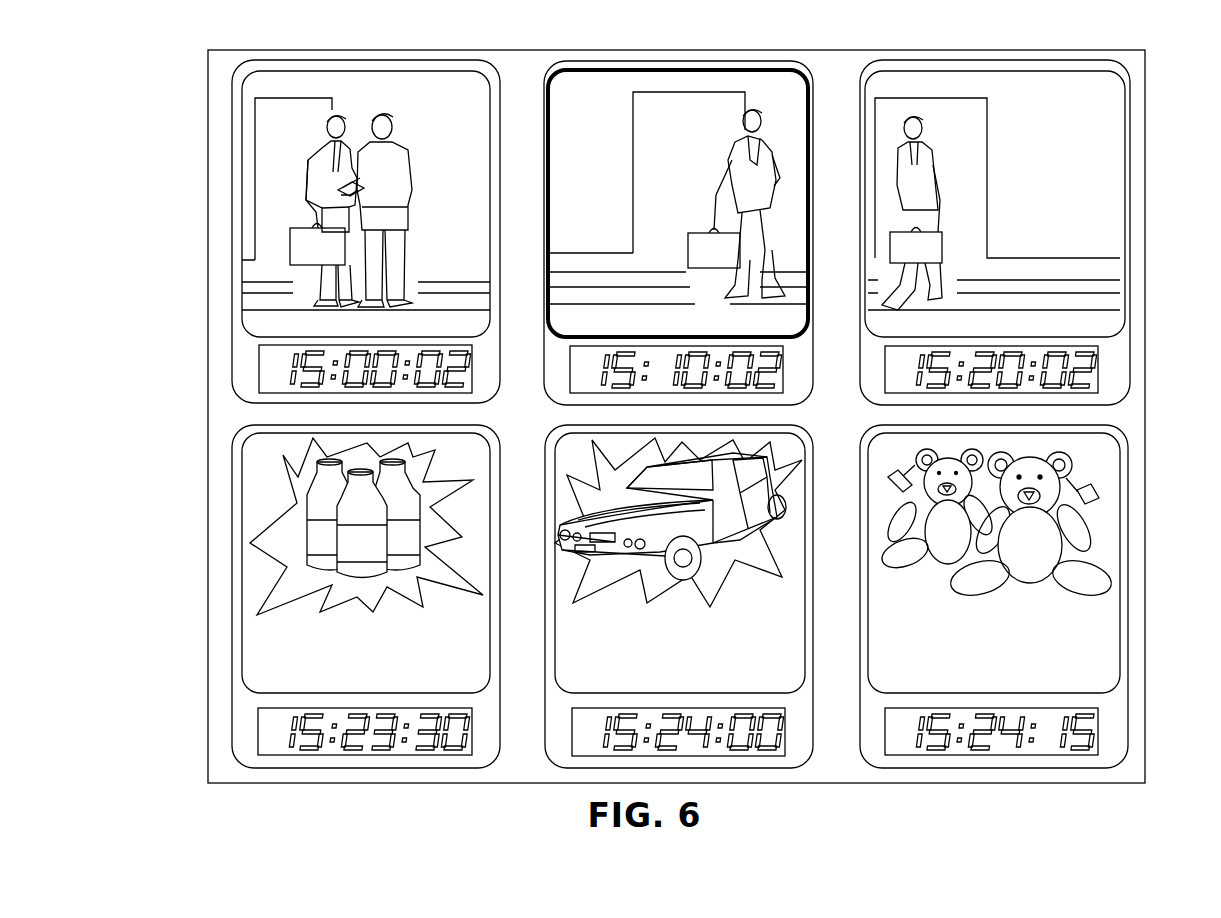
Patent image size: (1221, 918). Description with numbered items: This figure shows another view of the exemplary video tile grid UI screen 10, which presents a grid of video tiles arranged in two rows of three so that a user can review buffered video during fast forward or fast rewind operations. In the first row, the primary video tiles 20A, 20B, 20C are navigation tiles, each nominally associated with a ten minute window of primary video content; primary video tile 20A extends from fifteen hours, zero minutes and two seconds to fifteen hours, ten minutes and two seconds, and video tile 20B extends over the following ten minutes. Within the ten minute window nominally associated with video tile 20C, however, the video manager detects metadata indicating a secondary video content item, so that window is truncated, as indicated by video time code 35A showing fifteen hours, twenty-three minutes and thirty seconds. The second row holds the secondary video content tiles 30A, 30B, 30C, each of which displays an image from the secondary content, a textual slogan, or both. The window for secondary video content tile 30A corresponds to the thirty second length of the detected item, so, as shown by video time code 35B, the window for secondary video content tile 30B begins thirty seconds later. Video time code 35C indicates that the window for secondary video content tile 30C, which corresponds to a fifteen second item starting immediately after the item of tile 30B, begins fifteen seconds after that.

The video tile grid UI screen 10 is at (1145, 128).
The primary video tile 20A is at (383, 70).
The primary video tile 20B is at (703, 70).
The primary video tile 20C is at (1030, 70).
The secondary video content tile 30A is at (326, 596).
The secondary video content tile 30B is at (660, 596).
The secondary video content tile 30C is at (974, 596).
The video time code 35A is at (258, 733).
The video time code 35B is at (572, 716).
The video time code 35C is at (885, 716).